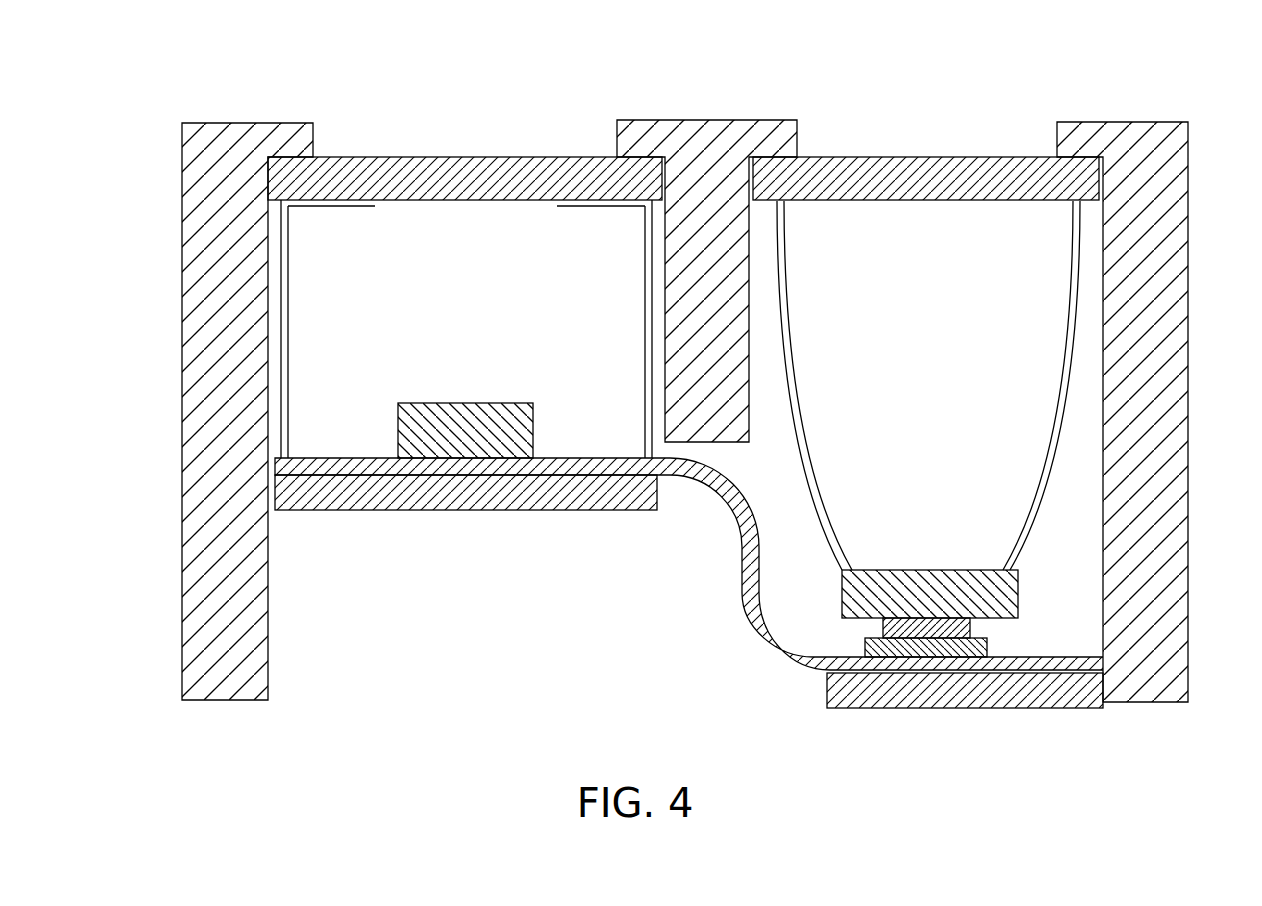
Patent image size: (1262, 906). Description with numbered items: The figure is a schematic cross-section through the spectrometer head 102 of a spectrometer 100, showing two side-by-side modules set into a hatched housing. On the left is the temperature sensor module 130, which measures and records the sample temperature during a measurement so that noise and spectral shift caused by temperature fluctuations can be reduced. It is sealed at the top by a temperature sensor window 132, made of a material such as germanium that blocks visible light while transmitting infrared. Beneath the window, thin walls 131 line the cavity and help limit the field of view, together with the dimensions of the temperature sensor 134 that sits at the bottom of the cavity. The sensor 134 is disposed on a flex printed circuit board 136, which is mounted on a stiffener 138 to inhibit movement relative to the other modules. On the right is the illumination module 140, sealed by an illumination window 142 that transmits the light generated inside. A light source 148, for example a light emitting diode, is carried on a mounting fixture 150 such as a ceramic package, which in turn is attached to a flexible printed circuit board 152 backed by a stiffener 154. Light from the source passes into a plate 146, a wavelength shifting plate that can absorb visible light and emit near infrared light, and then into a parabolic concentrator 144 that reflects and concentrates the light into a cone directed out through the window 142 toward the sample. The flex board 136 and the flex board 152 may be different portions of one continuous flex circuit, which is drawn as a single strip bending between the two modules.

The camera module assembly 100 is at (262, 90).
The spectrometer head 102 is at (303, 47).
The temperature sensor module 130 is at (331, 330).
The lens barrel of first camera 131 is at (280, 412).
The temperature sensor window 132 is at (280, 180).
The temperature sensor 134 is at (510, 440).
The flex printed circuit board 136 is at (457, 462).
The stiffener 138 is at (413, 495).
The illumination module 140 is at (1011, 298).
The illumination window 142 is at (1065, 178).
The parabolic concentrator 144 is at (1012, 400).
The plate 146 is at (995, 593).
The light source 148 is at (955, 628).
The mounting fixture 150 is at (975, 648).
The flexible printed circuit board 152 is at (1072, 665).
The stiffener 154 is at (1072, 695).